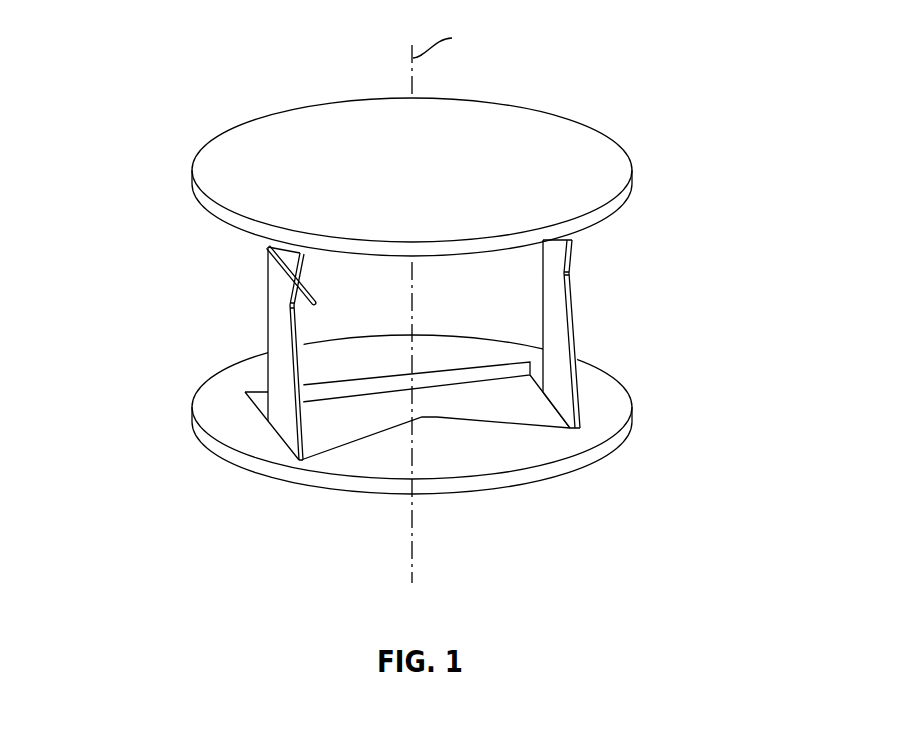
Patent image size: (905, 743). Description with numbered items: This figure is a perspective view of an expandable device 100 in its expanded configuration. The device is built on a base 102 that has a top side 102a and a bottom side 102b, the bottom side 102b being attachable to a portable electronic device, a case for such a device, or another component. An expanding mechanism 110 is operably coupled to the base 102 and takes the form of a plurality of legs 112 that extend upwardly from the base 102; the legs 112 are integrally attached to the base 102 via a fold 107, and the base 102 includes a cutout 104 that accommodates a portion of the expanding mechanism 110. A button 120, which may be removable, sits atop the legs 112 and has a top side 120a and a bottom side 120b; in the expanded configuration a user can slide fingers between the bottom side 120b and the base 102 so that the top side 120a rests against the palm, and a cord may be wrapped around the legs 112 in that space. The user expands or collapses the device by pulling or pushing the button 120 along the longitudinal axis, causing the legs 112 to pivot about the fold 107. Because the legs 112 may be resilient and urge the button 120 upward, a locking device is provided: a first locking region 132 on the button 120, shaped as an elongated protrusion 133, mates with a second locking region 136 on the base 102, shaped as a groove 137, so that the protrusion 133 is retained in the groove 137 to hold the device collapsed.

The expandable device 100 is at (168, 42).
The base 102 is at (522, 453).
The top side of base 102a is at (420, 462).
The bottom side of base 102b is at (332, 498).
The cutout 104 is at (600, 427).
The fold 107 is at (272, 432).
The expanding mechanism 110 is at (266, 341).
The legs 112 is at (275, 313).
The button 120 is at (624, 160).
The top side of button 120a is at (543, 133).
The bottom side of button 120b is at (618, 213).
The first locking region 132 is at (266, 265).
The protrusion 133 is at (287, 300).
The second locking region 136 is at (628, 424).
The groove 137 is at (580, 433).